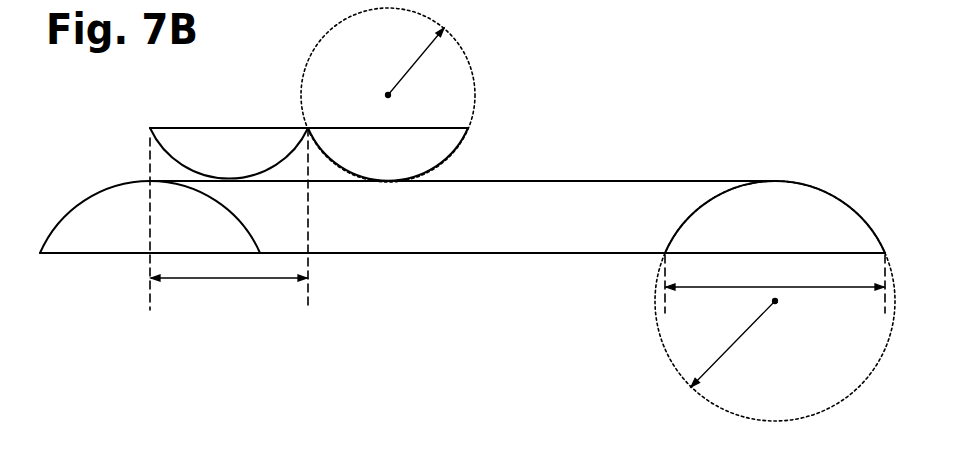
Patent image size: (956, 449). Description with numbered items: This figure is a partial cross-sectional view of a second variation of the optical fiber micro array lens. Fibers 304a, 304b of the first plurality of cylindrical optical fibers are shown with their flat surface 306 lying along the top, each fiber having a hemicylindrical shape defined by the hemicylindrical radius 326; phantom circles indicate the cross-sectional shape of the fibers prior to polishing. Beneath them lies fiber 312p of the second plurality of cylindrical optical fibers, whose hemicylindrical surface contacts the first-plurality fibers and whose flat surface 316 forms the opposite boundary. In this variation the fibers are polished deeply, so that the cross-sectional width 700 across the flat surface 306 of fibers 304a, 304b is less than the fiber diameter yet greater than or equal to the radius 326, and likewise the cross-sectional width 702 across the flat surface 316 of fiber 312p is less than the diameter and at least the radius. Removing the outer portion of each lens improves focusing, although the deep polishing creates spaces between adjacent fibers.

The optical fiber of the first plurality 304a is at (183, 127).
The optical fiber of the first plurality 304b is at (480, 150).
The flat bottom surface 306 is at (240, 126).
The hemicylindrical radius 326 is at (397, 80).
The optical fiber of the second plurality 312p is at (580, 231).
The flat top surface 316 is at (416, 258).
The cross-sectional width 700 is at (200, 282).
The cross-sectional width 702 is at (783, 290).